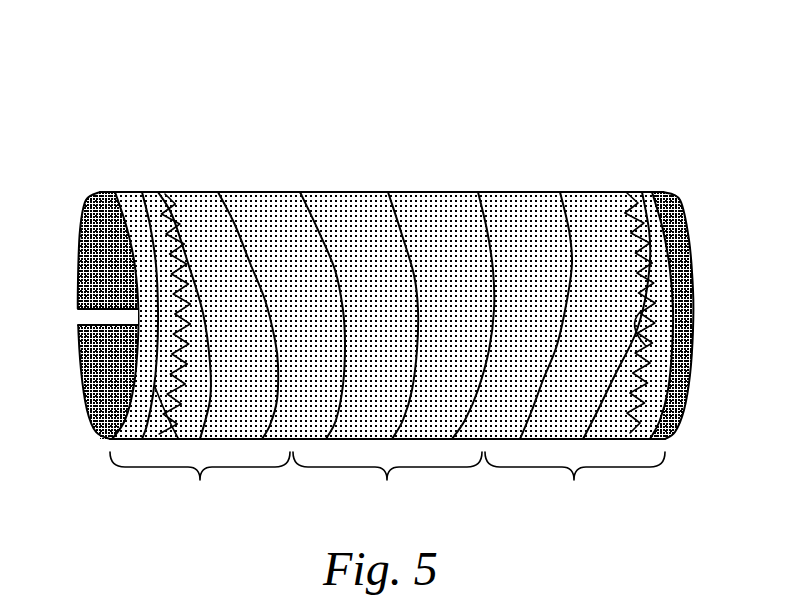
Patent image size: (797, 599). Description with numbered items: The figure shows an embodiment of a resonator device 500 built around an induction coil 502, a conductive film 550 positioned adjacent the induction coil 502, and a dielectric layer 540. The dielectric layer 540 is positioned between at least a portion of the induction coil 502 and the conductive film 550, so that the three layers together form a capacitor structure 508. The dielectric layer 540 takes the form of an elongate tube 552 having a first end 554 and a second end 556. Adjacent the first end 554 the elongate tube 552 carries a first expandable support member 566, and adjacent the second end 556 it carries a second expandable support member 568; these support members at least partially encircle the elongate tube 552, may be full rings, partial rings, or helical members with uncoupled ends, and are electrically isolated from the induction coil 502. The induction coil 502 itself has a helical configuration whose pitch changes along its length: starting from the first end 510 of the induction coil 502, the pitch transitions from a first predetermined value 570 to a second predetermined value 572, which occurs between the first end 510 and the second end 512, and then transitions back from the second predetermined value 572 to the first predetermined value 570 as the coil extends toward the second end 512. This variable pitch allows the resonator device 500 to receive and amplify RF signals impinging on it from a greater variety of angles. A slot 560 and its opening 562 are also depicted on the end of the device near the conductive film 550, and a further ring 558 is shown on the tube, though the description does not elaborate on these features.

The resonator device 500 is at (103, 67).
The induction coil 502 is at (420, 203).
The capacitor structure 508 is at (86, 449).
The first end of the induction coil 510 is at (140, 404).
The second end of the induction coil 512 is at (640, 312).
The dielectric layer 540 is at (360, 193).
The conductive film 550 is at (82, 235).
The elongate tube 552 is at (265, 170).
The first end of the elongate tube 554 is at (88, 166).
The second end of the elongate tube 556 is at (652, 176).
The stent ring 558 is at (518, 193).
The slot 560 is at (78, 301).
The slot opening 562 is at (62, 328).
The first expandable support member 566 is at (191, 187).
The second expandable support member 568 is at (617, 194).
The first predetermined value 570 is at (387, 479).
The second predetermined value 572 is at (387, 479).